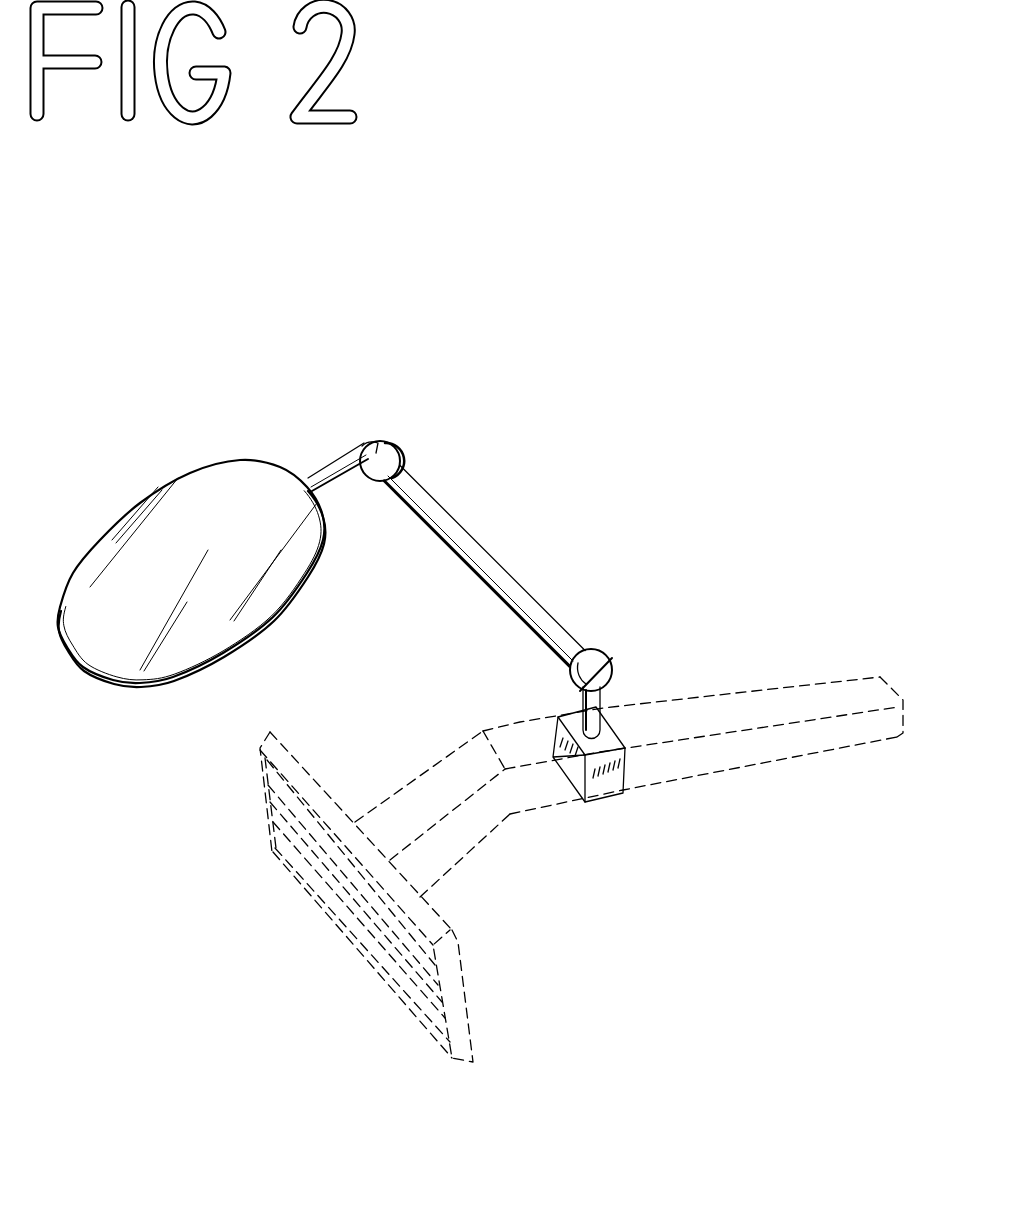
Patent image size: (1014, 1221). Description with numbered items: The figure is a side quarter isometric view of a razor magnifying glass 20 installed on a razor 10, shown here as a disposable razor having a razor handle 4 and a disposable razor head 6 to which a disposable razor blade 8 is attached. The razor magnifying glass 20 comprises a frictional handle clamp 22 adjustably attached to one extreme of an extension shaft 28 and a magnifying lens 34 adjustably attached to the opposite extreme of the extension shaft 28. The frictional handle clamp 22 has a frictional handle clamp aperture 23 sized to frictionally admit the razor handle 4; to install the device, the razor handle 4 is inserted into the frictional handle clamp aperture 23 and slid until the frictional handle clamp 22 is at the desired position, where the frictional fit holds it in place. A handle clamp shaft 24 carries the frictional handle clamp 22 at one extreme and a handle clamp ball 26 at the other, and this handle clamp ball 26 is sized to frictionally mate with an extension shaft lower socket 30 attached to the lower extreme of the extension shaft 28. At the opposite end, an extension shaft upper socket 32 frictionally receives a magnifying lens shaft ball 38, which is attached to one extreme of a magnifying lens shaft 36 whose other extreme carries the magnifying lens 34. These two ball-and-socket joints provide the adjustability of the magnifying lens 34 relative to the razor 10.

The razor handle 4 is at (693, 756).
The disposable razor head 6 is at (327, 899).
The disposable razor blade 8 is at (333, 868).
The razor 10 is at (442, 756).
The razor magnifying glass 20 is at (703, 240).
The frictional handle clamp 22 is at (577, 816).
The frictional handle clamp aperture 23 is at (583, 777).
The handle clamp shaft 24 is at (603, 700).
The handle clamp ball 26 is at (612, 675).
The extension shaft 28 is at (473, 537).
The extension shaft lower socket 30 is at (600, 648).
The extension shaft upper socket 32 is at (405, 440).
The magnifying lens 34 is at (192, 508).
The magnifying lens shaft 36 is at (333, 470).
The magnifying lens shaft ball 38 is at (372, 440).